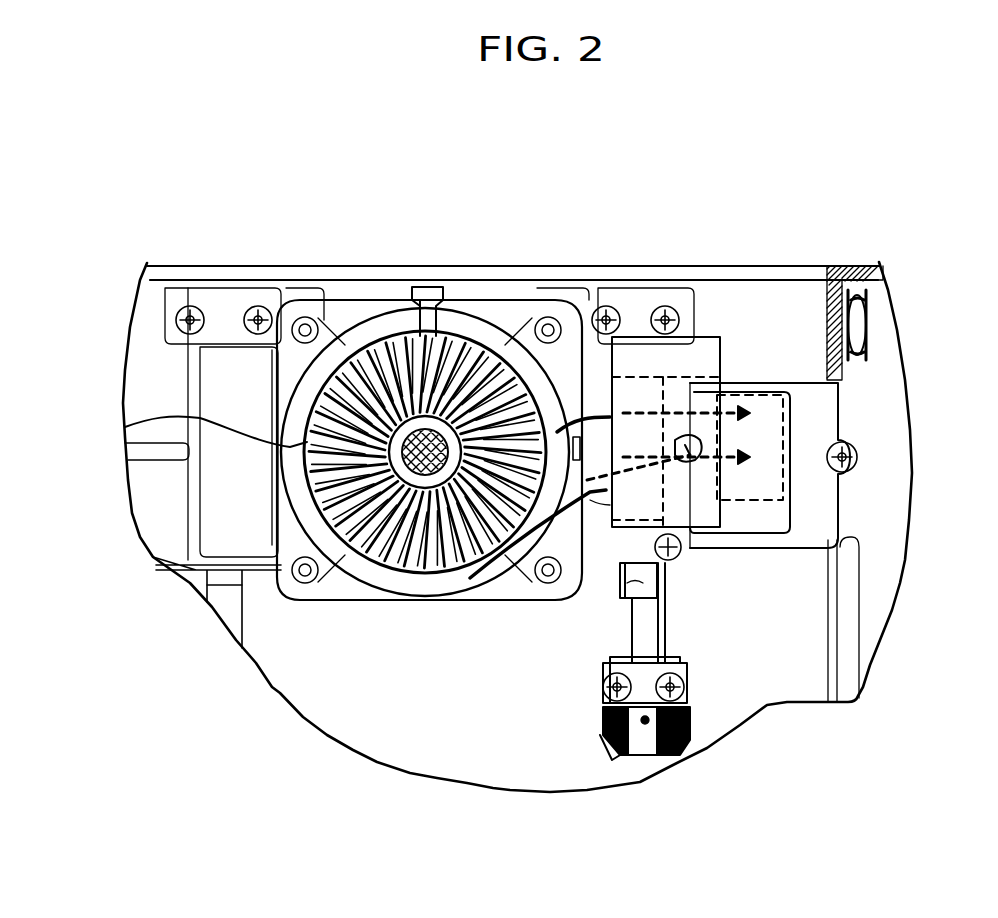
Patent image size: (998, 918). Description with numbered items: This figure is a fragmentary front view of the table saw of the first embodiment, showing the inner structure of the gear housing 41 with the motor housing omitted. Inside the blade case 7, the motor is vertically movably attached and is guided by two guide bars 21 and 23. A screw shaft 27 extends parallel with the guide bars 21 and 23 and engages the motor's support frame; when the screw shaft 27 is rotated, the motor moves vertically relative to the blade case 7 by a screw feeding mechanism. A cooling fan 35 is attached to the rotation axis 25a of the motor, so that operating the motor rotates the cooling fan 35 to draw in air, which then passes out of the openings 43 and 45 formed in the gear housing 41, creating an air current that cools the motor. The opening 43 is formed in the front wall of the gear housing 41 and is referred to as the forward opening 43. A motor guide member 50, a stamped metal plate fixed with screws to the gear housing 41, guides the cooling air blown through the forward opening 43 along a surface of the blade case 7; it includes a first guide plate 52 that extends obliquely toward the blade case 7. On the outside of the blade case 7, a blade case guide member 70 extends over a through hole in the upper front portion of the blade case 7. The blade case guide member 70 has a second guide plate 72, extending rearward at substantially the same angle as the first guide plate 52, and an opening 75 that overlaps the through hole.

The blade case 7 is at (438, 743).
The guide bar 21 is at (232, 618).
The guide bar 23 is at (633, 577).
The rotation axis 25a is at (126, 426).
The screw shaft 27 is at (653, 627).
The cooling fan 35 is at (426, 562).
The gear housing 41 is at (510, 587).
The forward opening 43 is at (562, 418).
The opening 45 is at (467, 320).
The motor guide member 50 is at (637, 360).
The first guide plate 52 is at (706, 345).
The blade case guide member 70 is at (805, 535).
The second guide plate 72 is at (737, 540).
The opening 75 is at (797, 413).